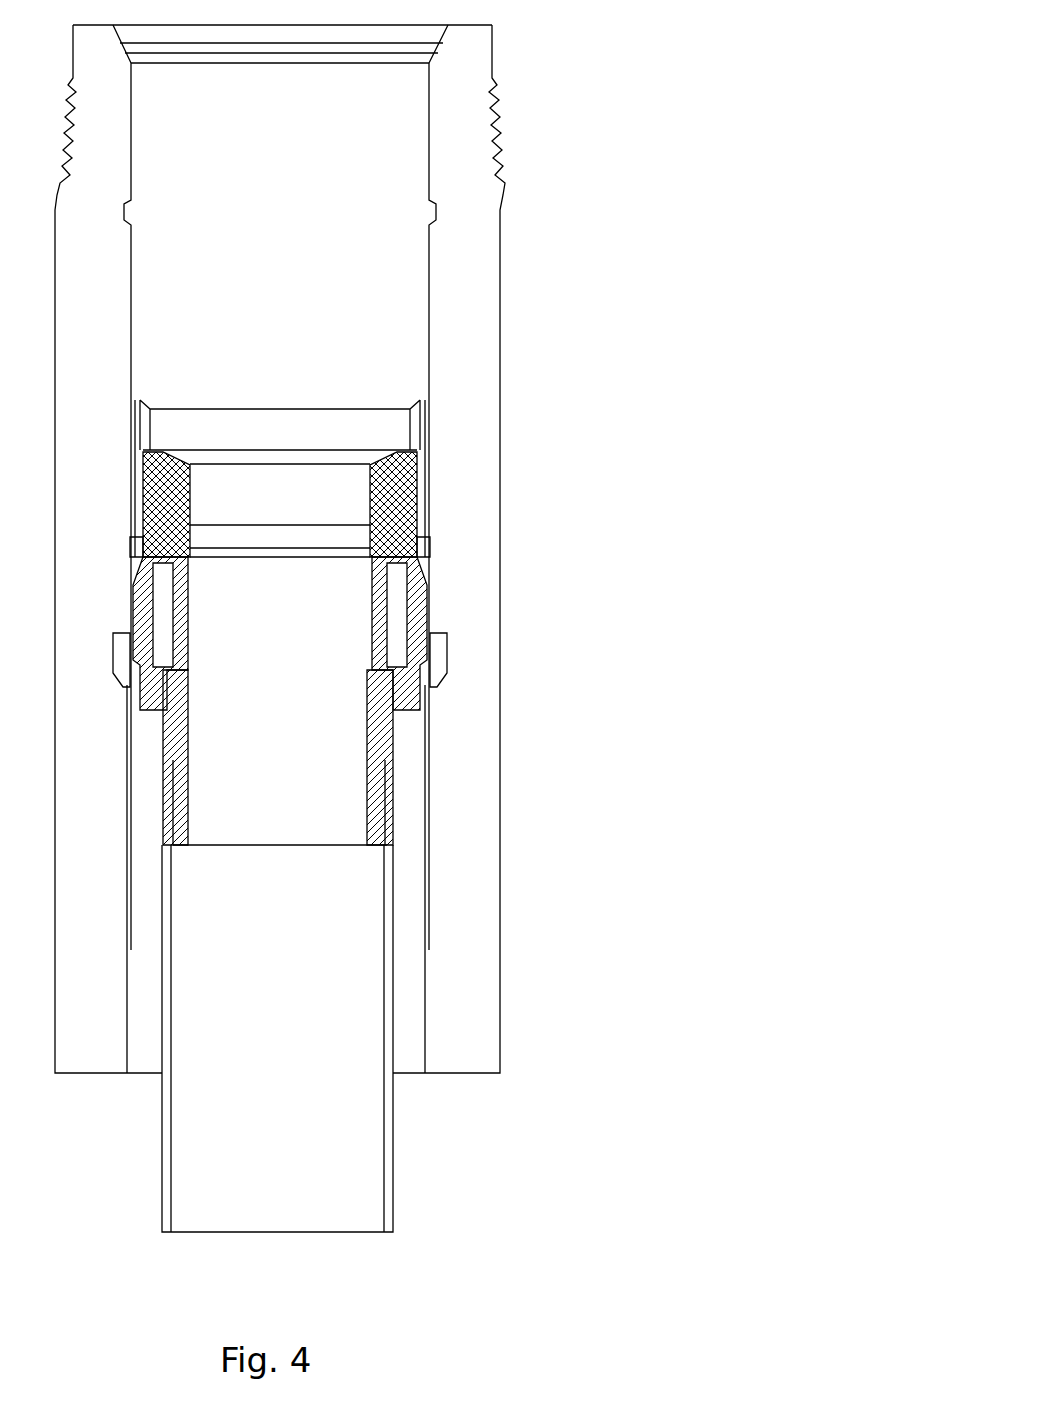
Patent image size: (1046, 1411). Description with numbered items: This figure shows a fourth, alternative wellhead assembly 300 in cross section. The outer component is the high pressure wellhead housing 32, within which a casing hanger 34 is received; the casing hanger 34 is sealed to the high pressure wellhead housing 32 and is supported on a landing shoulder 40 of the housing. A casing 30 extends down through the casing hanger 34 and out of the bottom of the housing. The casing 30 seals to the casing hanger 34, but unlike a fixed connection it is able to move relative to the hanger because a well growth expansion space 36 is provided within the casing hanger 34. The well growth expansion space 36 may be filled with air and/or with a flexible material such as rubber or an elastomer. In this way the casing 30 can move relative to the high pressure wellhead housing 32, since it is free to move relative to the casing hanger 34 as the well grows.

The wellhead assembly 300 is at (643, 57).
The high pressure wellhead housing 32 is at (470, 343).
The casing hanger 34 is at (430, 490).
The well growth expansion space 36 is at (428, 615).
The landing shoulder 40 is at (448, 655).
The casing 30 is at (388, 948).